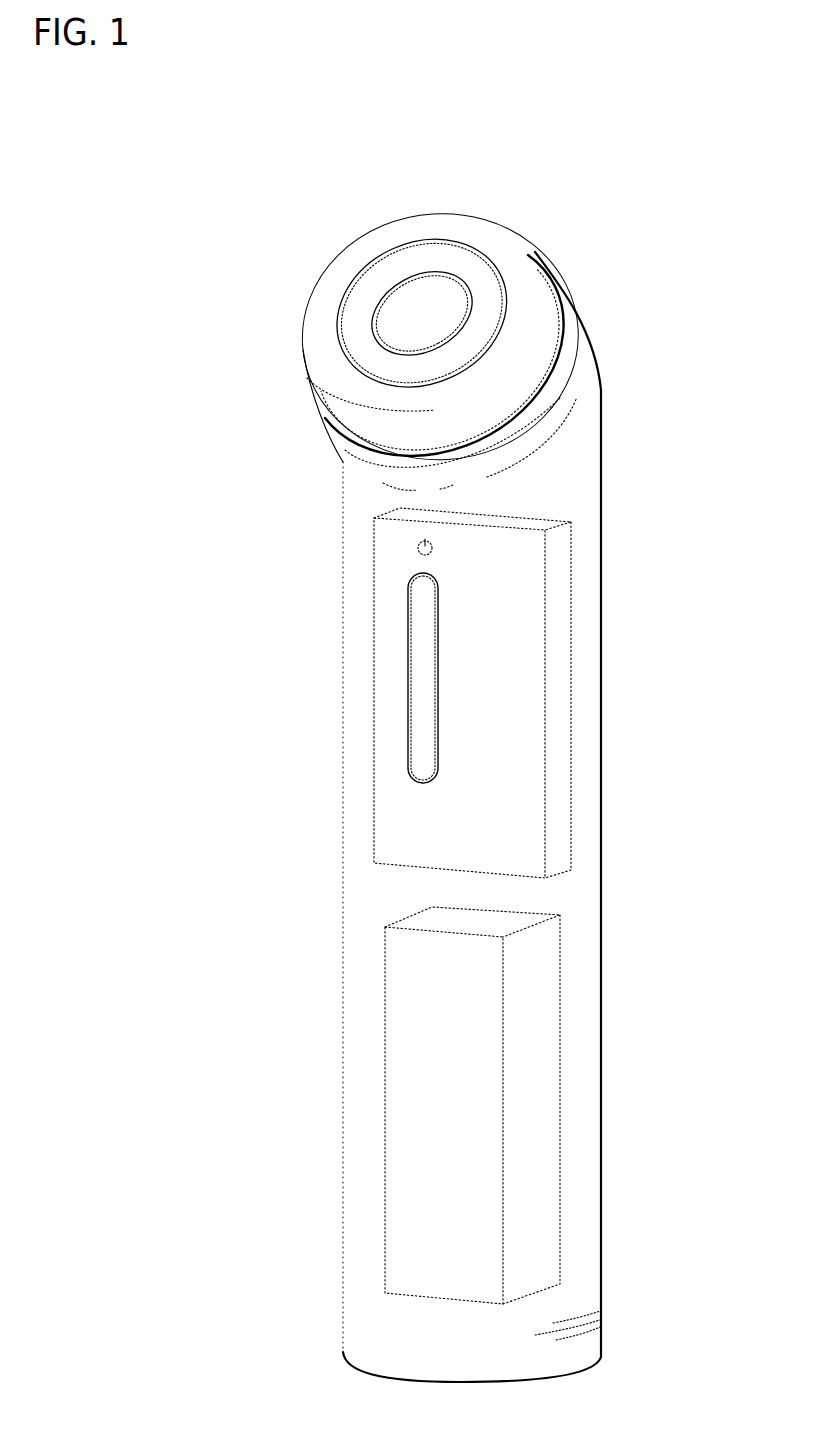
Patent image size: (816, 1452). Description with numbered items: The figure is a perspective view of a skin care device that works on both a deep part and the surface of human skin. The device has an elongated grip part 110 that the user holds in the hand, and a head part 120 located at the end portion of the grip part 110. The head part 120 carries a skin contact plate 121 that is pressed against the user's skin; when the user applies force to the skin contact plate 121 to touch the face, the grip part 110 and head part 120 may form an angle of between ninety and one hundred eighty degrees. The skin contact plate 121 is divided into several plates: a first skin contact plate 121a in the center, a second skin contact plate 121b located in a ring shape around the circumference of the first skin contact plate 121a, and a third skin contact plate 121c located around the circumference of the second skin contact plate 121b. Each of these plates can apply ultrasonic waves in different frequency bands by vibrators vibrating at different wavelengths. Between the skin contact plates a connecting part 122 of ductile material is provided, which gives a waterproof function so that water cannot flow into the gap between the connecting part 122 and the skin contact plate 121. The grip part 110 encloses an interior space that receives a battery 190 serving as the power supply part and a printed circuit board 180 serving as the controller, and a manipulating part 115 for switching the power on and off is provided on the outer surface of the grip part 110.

The grip part 110 is at (362, 727).
The manipulating part 115 is at (420, 675).
The head part 120 is at (365, 432).
The skin contact plate 121 is at (500, 285).
The first skin contact plate 121a is at (423, 298).
The second skin contact plate 121b is at (483, 280).
The third skin contact plate 121c is at (520, 278).
The connecting part 122 is at (372, 320).
The printed circuit board 180 is at (545, 707).
The battery 190 is at (537, 1117).